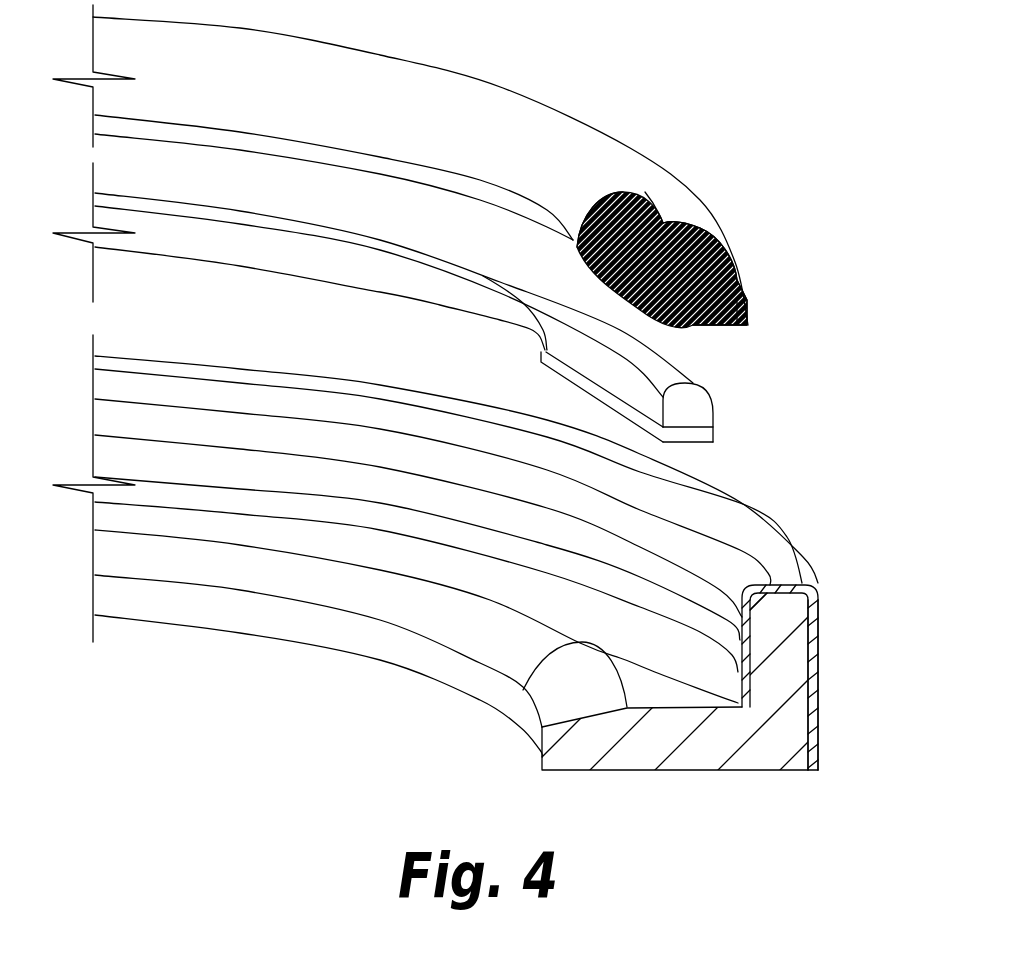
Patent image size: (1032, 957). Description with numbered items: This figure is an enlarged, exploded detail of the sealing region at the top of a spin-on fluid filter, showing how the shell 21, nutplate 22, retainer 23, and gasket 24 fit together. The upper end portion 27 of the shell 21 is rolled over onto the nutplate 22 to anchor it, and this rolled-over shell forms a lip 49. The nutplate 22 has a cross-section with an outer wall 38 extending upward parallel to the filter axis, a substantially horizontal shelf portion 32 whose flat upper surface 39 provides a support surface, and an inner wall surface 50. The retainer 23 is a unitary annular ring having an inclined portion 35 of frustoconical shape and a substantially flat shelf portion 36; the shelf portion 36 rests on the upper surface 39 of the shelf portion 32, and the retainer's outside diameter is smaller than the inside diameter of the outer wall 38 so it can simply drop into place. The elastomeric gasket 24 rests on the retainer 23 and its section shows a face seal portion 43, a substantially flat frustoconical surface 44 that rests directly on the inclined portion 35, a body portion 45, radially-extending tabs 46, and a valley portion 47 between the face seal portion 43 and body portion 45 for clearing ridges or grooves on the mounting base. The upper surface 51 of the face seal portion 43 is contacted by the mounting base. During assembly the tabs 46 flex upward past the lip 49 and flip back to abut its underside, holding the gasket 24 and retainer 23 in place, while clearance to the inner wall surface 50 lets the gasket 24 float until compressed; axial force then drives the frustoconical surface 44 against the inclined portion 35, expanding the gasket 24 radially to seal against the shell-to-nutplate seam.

The shell 21 is at (820, 675).
The nutplate 22 is at (643, 745).
The retainer 23 is at (700, 393).
The gasket 24 is at (582, 210).
The upper end portion 27 is at (818, 583).
The shelf portion 32 is at (690, 710).
The inclined portion 35 is at (560, 368).
The shelf portion 36 is at (690, 433).
The outer wall 38 is at (820, 705).
The upper surface 39 is at (495, 710).
The face seal portion 43 is at (673, 222).
The frustoconical surface 44 is at (607, 300).
The body portion 45 is at (727, 240).
The radially-extending tabs 46 is at (743, 283).
The valley portion 47 is at (700, 197).
The lip 49 is at (750, 632).
The inner wall surface 50 is at (783, 673).
The upper surface 51 is at (623, 187).